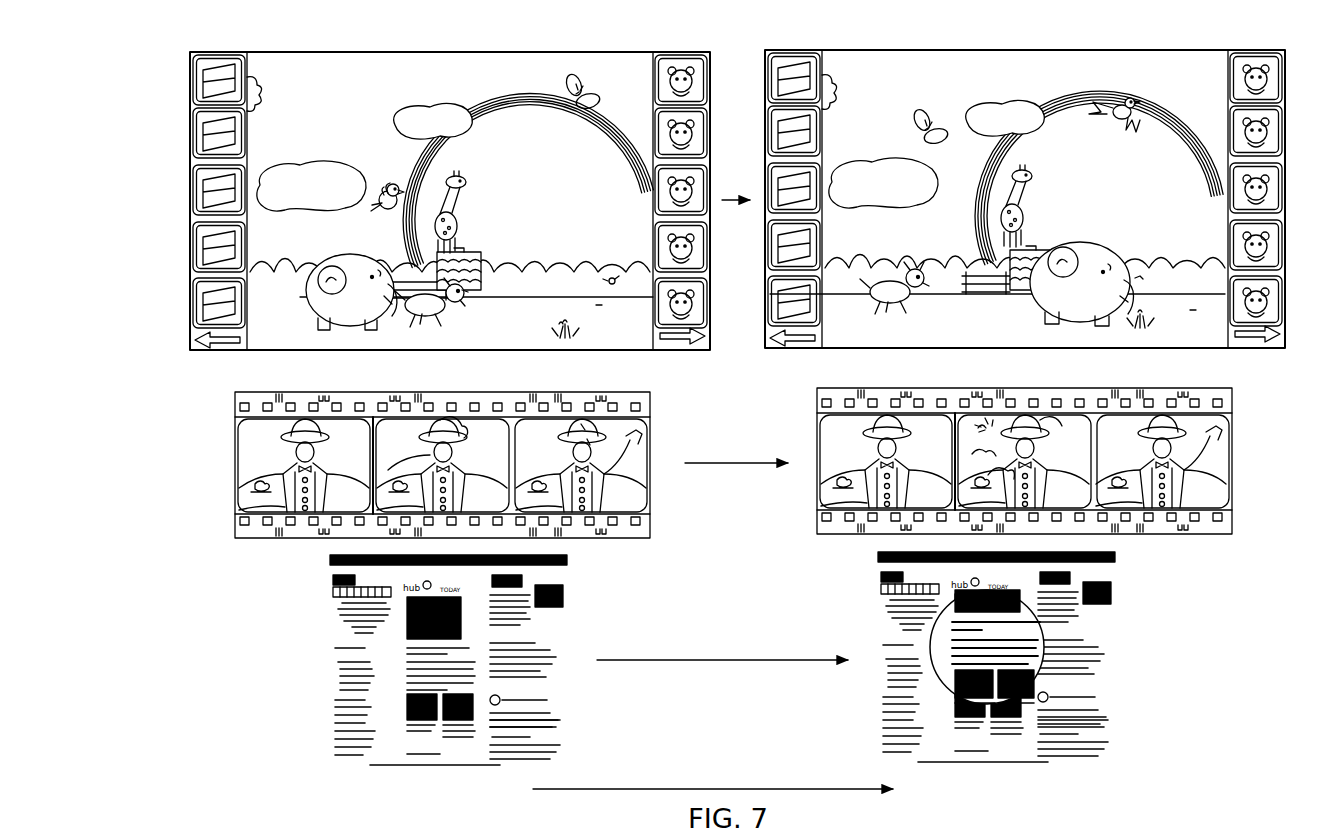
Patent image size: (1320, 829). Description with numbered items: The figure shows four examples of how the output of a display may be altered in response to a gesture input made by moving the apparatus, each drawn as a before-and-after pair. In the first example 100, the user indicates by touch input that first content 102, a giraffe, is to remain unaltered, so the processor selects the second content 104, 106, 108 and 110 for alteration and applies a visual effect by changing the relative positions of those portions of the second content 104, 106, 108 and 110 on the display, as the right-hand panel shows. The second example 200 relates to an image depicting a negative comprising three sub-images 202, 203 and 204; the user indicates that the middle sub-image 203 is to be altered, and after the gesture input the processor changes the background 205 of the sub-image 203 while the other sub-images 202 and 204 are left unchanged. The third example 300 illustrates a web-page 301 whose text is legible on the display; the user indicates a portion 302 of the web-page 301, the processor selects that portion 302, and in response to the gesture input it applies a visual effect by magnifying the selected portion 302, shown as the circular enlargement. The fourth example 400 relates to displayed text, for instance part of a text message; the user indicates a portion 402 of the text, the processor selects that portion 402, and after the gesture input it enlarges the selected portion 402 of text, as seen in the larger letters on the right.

The first example 100 is at (185, 212).
The first content 102 is at (458, 222).
The second content 104 is at (387, 181).
The second content 106 is at (614, 81).
The second content 108 is at (304, 254).
The second content 110 is at (482, 318).
The second example 200 is at (212, 471).
The first video frame 202 is at (246, 428).
The sub-image 203 is at (428, 425).
The third video frame 204 is at (637, 426).
The background 205 is at (389, 437).
The third example 300 is at (308, 669).
The web-page 301 is at (583, 727).
The portion of the web-page 302 is at (1030, 617).
The fourth example 400 is at (322, 801).
The portion of text 402 is at (1094, 789).